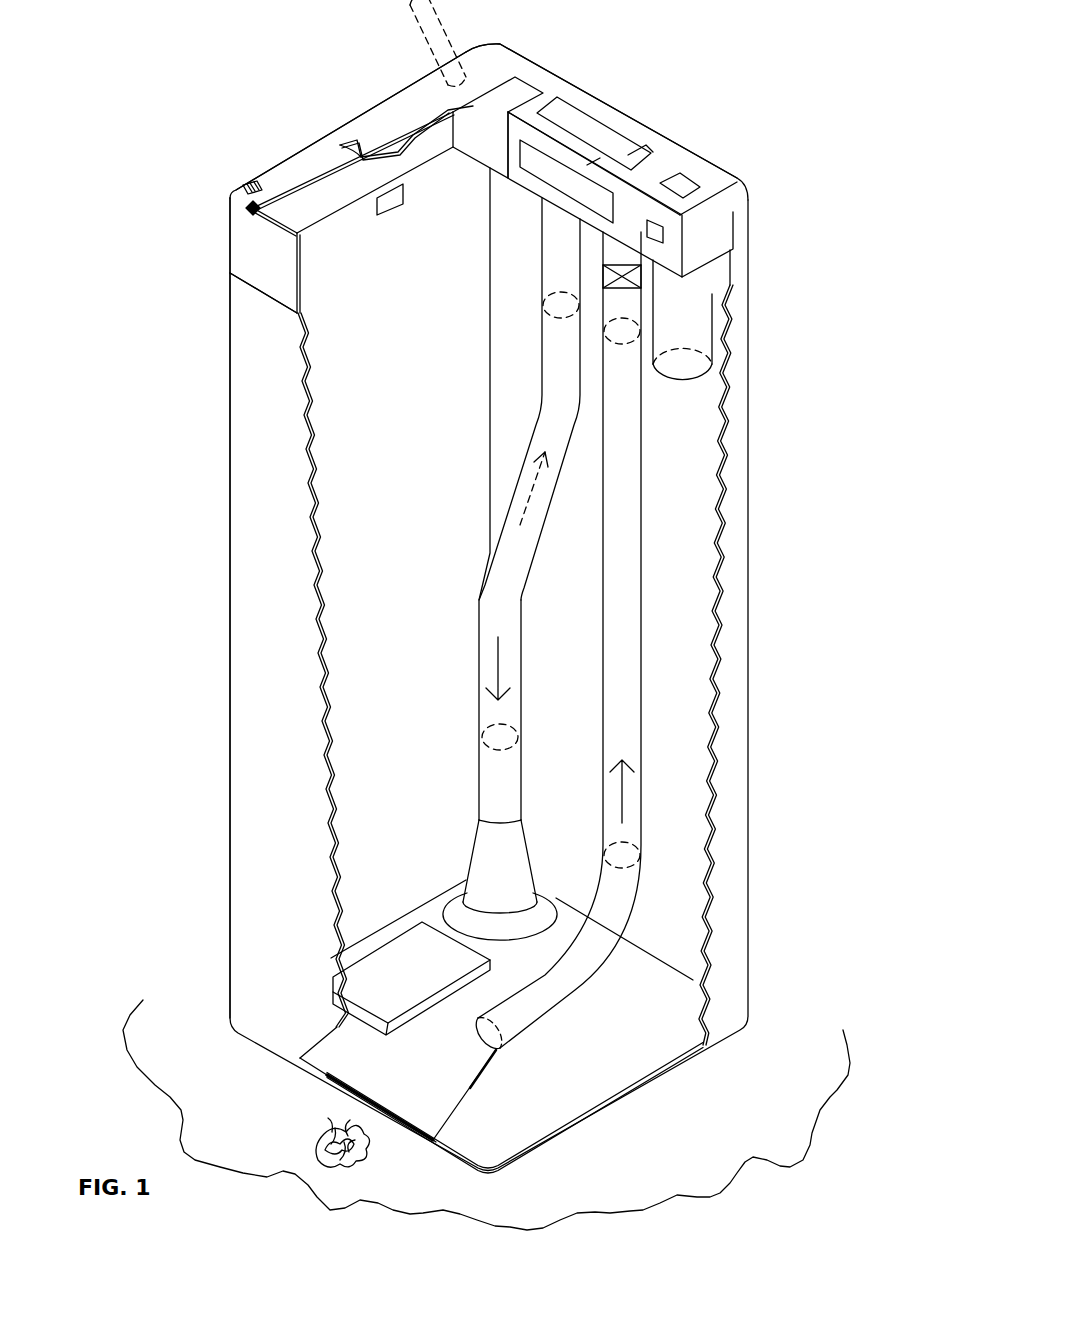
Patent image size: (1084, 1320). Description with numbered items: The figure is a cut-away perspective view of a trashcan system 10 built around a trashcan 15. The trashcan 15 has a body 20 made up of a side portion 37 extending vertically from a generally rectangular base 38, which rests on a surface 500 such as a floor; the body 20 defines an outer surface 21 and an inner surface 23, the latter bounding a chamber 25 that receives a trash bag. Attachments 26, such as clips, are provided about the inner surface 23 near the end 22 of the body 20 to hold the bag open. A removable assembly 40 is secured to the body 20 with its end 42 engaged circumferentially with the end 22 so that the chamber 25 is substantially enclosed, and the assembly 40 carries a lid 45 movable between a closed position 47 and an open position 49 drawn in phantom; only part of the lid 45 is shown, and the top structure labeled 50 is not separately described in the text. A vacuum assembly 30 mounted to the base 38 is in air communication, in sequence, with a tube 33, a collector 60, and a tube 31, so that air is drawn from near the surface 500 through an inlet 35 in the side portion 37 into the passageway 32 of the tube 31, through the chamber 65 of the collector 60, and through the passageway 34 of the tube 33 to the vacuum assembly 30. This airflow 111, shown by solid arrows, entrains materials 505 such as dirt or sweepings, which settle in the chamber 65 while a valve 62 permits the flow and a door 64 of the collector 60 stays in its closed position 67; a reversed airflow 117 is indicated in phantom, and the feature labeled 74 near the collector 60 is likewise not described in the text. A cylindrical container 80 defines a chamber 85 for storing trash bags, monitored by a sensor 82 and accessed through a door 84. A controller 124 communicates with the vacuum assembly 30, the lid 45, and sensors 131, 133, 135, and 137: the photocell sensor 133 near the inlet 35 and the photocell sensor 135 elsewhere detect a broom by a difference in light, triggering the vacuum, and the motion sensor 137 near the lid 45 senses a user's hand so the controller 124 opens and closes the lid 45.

The trashcan system 10 is at (806, 78).
The trashcan 15 is at (265, 74).
The body 20 is at (245, 598).
The outer surface 21 is at (255, 722).
The end 22 is at (243, 283).
The inner surface 23 is at (333, 487).
The chamber 25 is at (418, 595).
The attachments 26 is at (383, 200).
The vacuum assembly 30 is at (513, 857).
The tube 31 is at (530, 1017).
The passageway 32 is at (590, 987).
The tube 33 is at (521, 668).
The passageway 34 is at (525, 561).
The inlet 35 is at (323, 1087).
The side portion 37 is at (255, 908).
The base 38 is at (557, 1110).
The assembly 40 is at (242, 233).
The end 42 is at (258, 287).
The lid 45 is at (430, 50).
The closed position 47 is at (420, 118).
The open position 49 is at (420, 33).
The lid 50 is at (520, 83).
The collector 60 is at (543, 100).
The valve 62 is at (603, 265).
The door 64 is at (540, 163).
The chamber 65 is at (590, 139).
The closed position 67 is at (587, 187).
The port 74 is at (633, 153).
The container 80 is at (712, 313).
The sensor 82 is at (663, 232).
The door 84 is at (687, 185).
The chamber 85 is at (700, 316).
The airflow 111 is at (495, 668).
The airflow 117 is at (527, 510).
The controller 124 is at (400, 948).
The sensor 131 is at (433, 1137).
The sensor 133 is at (330, 1075).
The sensor 135 is at (243, 187).
The sensor 137 is at (258, 256).
The surface 500 is at (790, 1115).
The materials 505 is at (317, 1137).